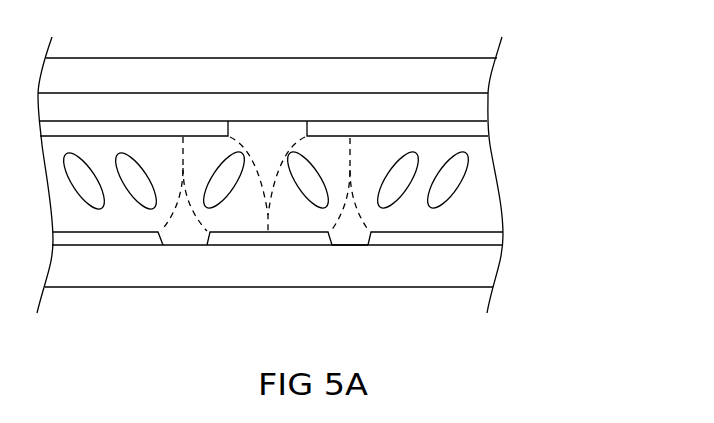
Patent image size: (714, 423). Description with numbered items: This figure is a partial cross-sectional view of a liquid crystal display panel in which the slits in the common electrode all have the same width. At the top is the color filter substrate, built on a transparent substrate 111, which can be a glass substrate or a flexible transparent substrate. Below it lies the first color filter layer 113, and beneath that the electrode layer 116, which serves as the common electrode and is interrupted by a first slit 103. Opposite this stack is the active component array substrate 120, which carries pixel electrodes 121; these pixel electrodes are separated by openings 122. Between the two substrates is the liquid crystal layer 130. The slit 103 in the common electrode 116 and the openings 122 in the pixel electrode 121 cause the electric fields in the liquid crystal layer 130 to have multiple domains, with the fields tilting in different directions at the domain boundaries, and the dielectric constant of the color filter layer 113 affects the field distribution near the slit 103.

The first slit 103 is at (267, 136).
The transparent substrate 111 is at (480, 78).
The first color filter layer 113 is at (477, 108).
The electrode layer 116 is at (478, 130).
The liquid crystal layer 130 is at (513, 185).
The pixel electrode 121 is at (493, 239).
The active component array substrate 120 is at (510, 266).
The opening 122 is at (348, 243).